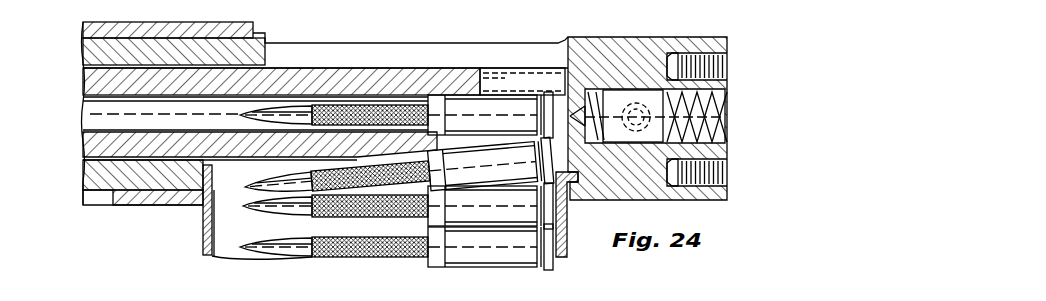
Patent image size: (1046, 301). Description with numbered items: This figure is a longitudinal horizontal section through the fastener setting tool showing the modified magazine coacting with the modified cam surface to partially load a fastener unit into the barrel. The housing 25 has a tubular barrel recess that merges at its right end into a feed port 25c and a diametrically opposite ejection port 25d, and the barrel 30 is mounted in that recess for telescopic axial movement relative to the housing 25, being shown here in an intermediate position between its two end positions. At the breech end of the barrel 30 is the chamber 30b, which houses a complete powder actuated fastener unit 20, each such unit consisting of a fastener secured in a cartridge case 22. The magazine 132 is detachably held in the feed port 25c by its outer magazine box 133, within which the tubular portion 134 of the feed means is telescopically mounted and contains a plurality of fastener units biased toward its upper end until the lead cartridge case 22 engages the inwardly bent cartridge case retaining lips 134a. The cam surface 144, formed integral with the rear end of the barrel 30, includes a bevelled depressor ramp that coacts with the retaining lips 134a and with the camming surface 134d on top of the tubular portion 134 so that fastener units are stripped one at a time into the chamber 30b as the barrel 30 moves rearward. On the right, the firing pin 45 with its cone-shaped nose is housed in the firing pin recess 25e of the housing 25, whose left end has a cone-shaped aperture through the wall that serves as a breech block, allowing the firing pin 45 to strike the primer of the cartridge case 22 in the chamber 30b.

The barrel 30 is at (85, 78).
The ejection port 25d is at (268, 46).
The chamber 30b is at (423, 97).
The cam surface 144 is at (493, 77).
The housing 25 is at (647, 37).
The cartridge case retaining lip 134a is at (522, 81).
The camming surface 134d is at (232, 214).
The feed port 25c is at (204, 197).
The magazine 132 is at (190, 257).
The tubular portion 134 is at (216, 250).
The powder actuated fastener unit 20 is at (403, 260).
The cartridge case 22 is at (511, 260).
The outer magazine box 133 is at (568, 255).
The firing pin 45 is at (641, 145).
The firing pin recess 25e is at (725, 100).